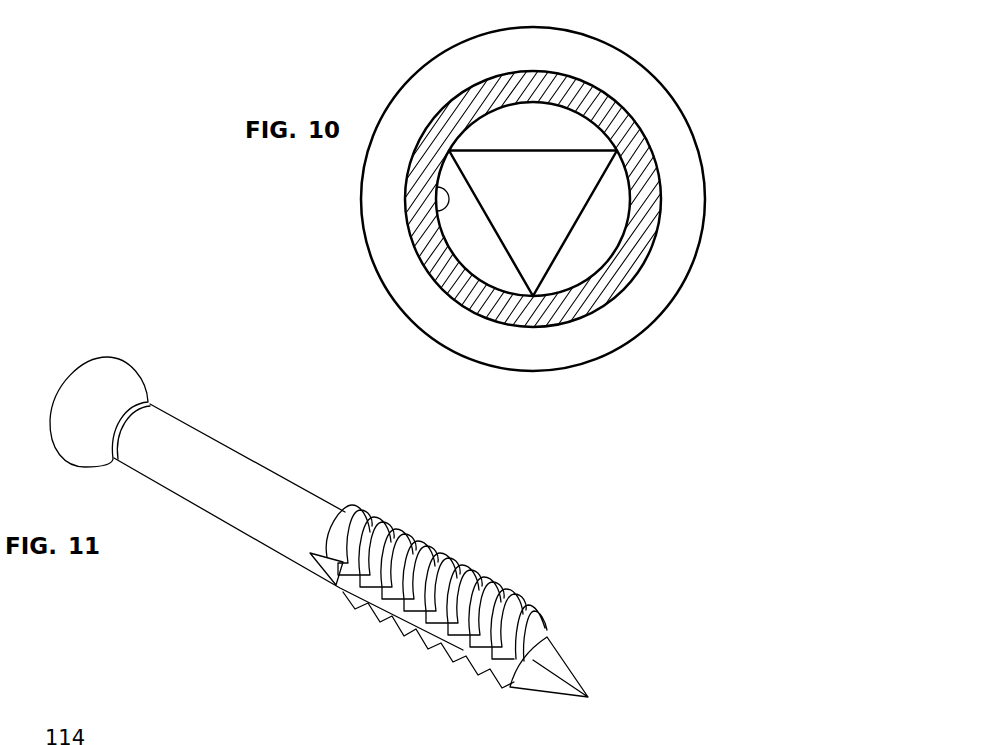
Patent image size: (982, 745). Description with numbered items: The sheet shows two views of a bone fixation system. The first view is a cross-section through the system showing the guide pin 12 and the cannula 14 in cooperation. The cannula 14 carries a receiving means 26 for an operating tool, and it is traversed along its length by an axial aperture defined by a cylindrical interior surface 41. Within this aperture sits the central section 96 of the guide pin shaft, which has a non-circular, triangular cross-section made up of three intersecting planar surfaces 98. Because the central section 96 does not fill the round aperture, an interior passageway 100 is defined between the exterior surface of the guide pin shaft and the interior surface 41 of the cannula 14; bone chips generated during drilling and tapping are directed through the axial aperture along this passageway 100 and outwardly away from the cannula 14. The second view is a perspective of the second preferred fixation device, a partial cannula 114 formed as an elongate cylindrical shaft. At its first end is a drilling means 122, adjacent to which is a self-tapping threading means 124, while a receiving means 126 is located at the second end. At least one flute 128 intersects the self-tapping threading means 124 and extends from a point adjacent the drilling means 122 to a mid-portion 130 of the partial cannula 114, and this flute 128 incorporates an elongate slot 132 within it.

In FIG. 10, the guide pin 12 is at (553, 203).
In FIG. 10, the cannula 14 is at (668, 170).
In FIG. 10, the receiving means 26 is at (372, 281).
In FIG. 10, the cylindrical interior surface 41 is at (447, 194).
In FIG. 10, the central section 96 is at (571, 249).
In FIG. 10, the planar surfaces 98 is at (548, 152).
In FIG. 10, the interior passageway 100 is at (510, 128).
In FIG. 11, the partial cannula 114 is at (319, 526).
In FIG. 11, the drilling means 122 is at (543, 683).
In FIG. 11, the self-tapping threading means 124 is at (430, 548).
In FIG. 11, the receiving means 126 is at (128, 372).
In FIG. 11, the flute 128 is at (374, 618).
In FIG. 11, the mid-portion 130 is at (232, 504).
In FIG. 11, the elongate slot 132 is at (407, 633).